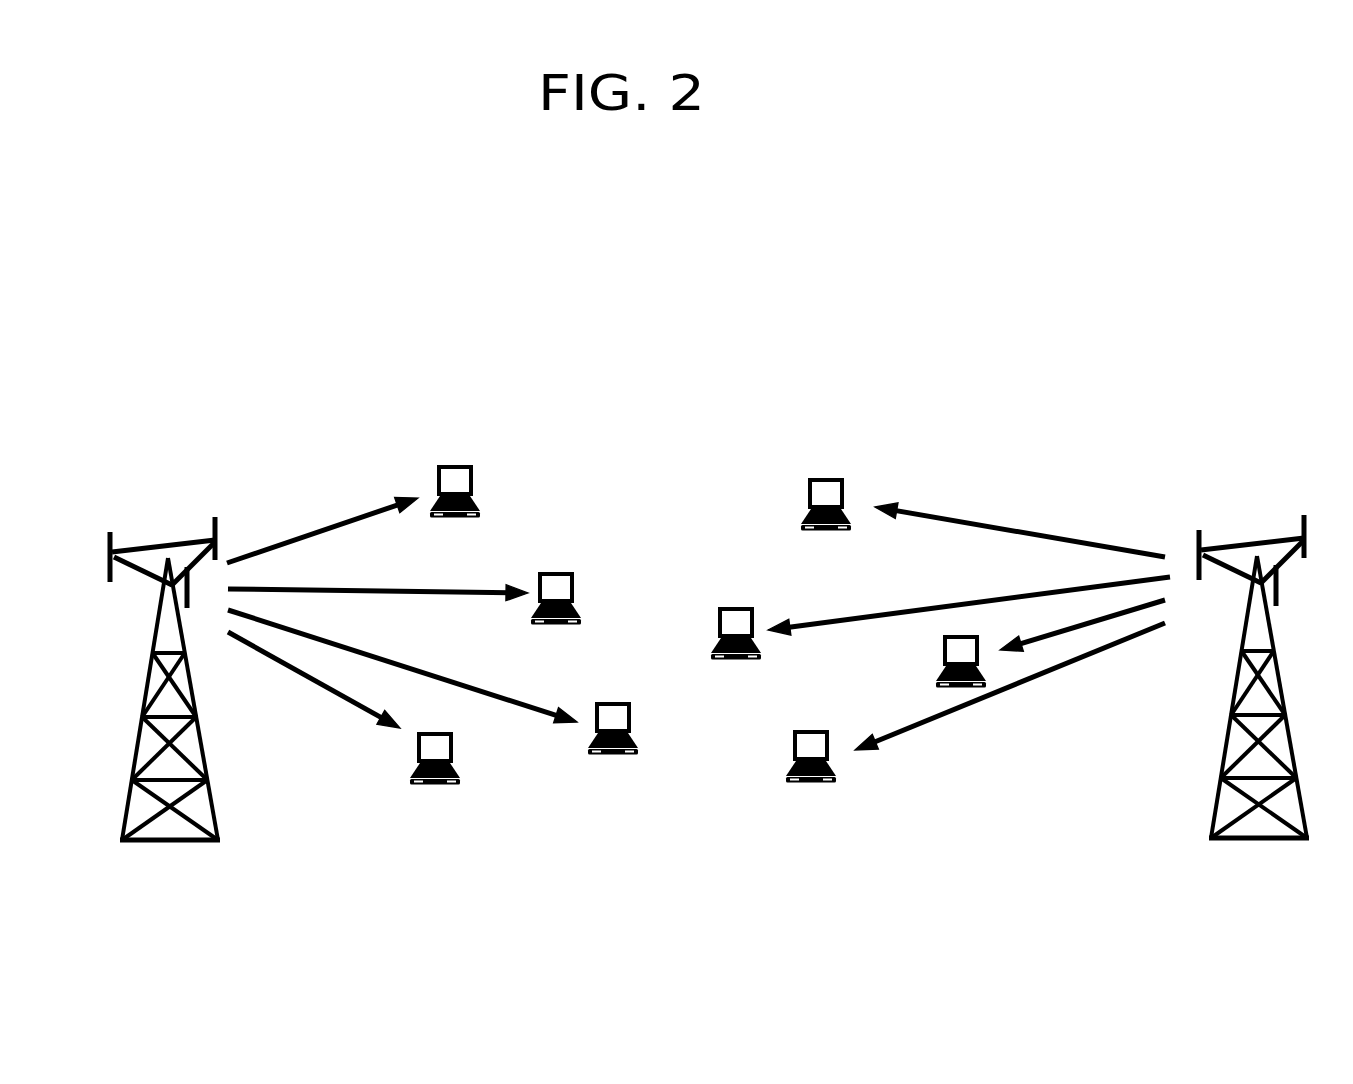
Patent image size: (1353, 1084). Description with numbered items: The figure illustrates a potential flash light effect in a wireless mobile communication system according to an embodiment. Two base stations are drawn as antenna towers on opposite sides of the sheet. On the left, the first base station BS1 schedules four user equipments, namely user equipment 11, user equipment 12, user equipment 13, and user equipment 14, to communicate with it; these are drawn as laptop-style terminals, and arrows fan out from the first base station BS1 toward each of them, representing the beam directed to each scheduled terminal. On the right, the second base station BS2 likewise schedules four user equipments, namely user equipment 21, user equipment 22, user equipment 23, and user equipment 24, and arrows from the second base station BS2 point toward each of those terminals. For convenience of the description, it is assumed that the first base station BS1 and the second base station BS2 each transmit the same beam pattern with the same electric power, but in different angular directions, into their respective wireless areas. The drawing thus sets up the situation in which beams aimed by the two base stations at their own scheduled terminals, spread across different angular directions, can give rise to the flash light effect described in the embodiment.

The base station BS1 is at (165, 654).
The base station BS2 is at (1254, 650).
The user equipment 11 is at (453, 470).
The user equipment 12 is at (553, 573).
The user equipment 13 is at (646, 729).
The user equipment 14 is at (445, 782).
The user equipment 21 is at (826, 478).
The user equipment 22 is at (734, 610).
The user equipment 23 is at (923, 662).
The user equipment 24 is at (818, 780).